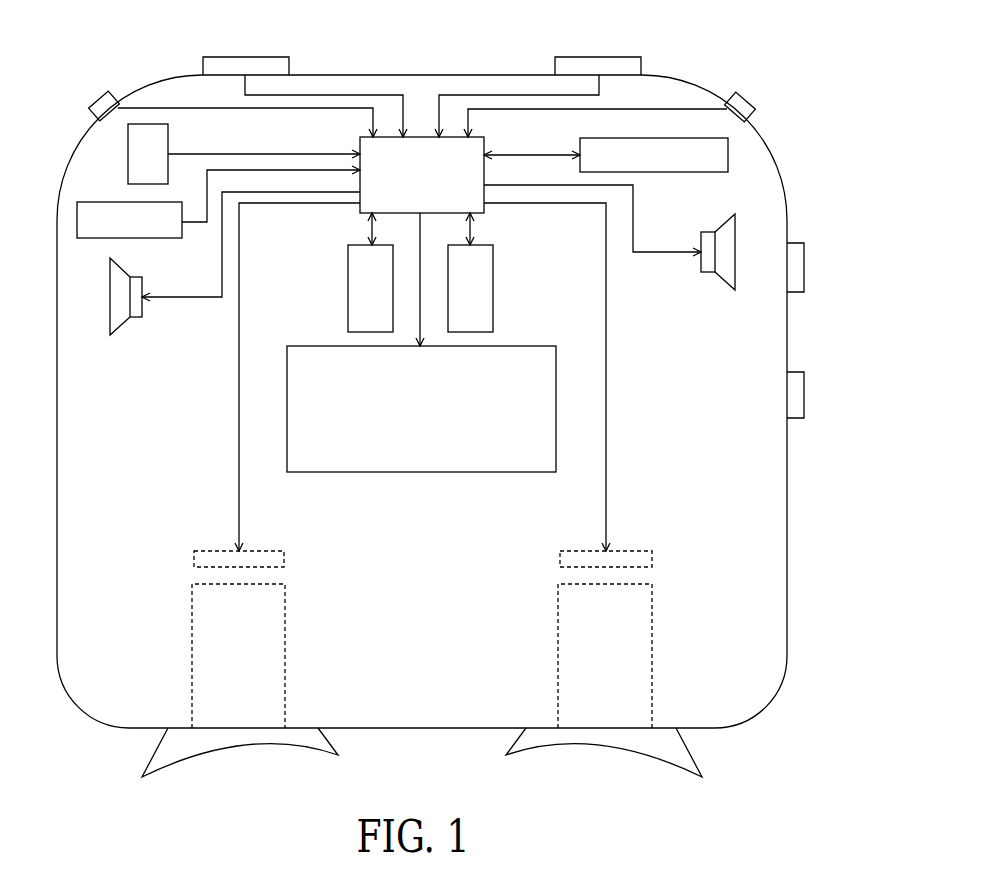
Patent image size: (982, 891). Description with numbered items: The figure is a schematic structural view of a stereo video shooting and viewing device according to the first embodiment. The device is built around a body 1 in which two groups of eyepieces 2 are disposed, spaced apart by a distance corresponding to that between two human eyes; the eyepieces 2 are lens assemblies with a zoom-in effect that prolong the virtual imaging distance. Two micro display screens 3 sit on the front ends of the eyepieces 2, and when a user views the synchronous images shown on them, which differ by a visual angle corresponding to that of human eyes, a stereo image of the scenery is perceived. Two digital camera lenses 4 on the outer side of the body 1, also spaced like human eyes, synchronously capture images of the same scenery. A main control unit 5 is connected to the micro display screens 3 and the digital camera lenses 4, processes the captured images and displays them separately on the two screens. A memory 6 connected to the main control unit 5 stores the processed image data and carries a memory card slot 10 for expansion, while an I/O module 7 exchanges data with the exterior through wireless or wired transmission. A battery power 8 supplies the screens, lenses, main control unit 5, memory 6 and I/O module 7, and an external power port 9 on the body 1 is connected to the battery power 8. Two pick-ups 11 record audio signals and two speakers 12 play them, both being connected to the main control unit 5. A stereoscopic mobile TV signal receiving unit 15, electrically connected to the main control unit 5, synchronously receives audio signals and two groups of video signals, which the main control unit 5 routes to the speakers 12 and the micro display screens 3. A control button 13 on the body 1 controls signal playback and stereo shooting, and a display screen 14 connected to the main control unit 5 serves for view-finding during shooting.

The body 1 is at (788, 530).
The eyepieces 2 is at (192, 645).
The micro display screens 3 is at (207, 552).
The digital camera lenses 4 is at (224, 60).
The main control unit 5 is at (476, 148).
The memory 6 is at (348, 272).
The input/output module 7 is at (633, 138).
The battery power 8 is at (128, 156).
The external power port 9 is at (802, 400).
The memory card slot 10 is at (802, 265).
The pick-ups 11 is at (97, 101).
The speakers 12 is at (112, 298).
The control button 13 is at (110, 202).
The display screen 14 is at (494, 347).
The stereoscopic mobile TV signal receiving unit 15 is at (488, 278).